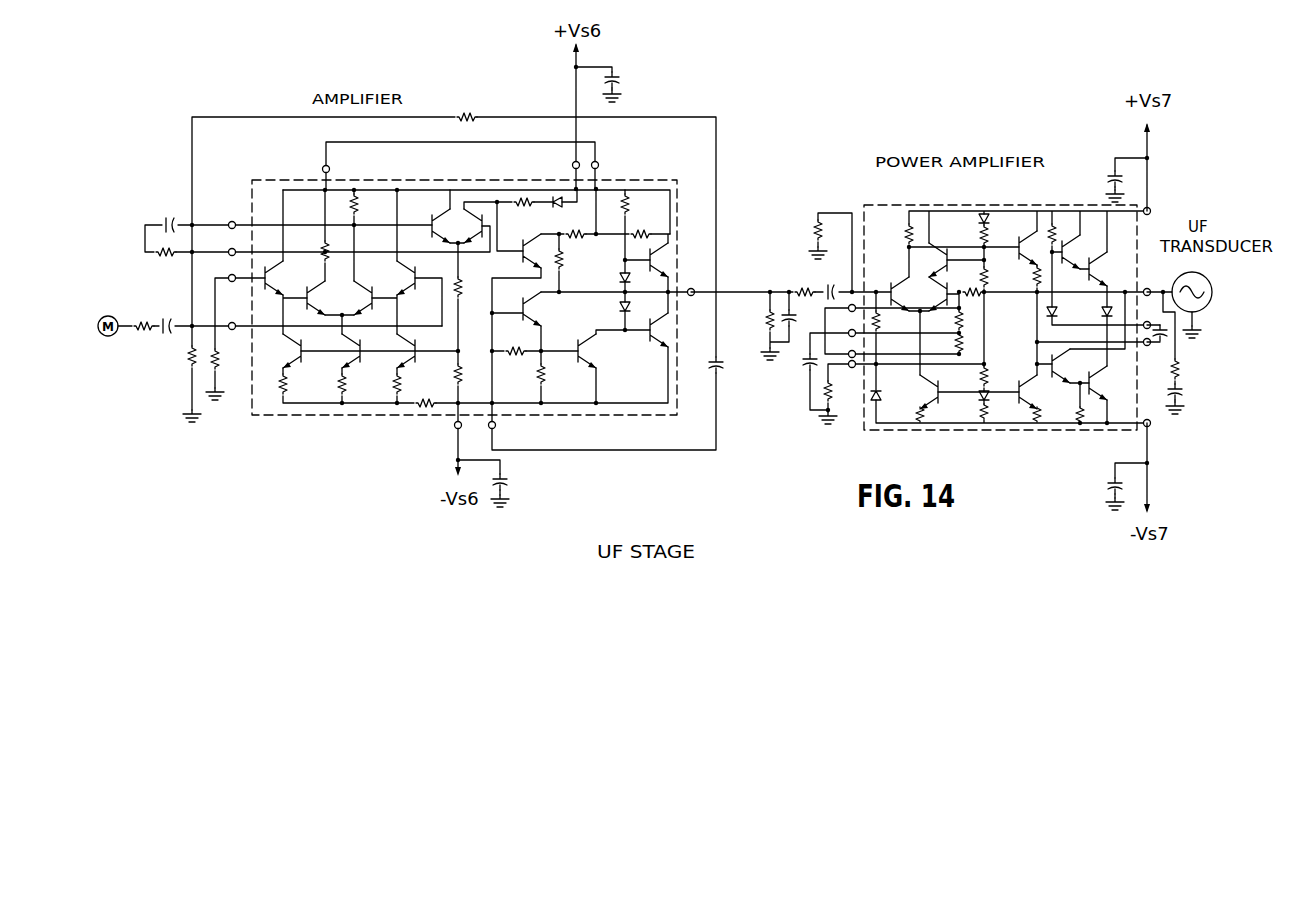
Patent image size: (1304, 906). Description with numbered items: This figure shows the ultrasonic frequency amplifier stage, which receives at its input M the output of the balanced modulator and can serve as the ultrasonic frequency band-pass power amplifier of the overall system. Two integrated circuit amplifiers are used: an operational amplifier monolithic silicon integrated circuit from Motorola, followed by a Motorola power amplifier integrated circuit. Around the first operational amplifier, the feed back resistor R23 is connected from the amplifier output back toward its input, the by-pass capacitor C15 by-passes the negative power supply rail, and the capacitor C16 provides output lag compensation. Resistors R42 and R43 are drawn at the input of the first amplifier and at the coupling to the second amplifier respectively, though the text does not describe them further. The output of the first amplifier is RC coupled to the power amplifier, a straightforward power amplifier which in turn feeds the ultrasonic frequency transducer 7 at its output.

The ultrasonic frequency transducer 7 is at (1212, 292).
The feed back resistor R23 is at (468, 110).
The resistor R42 is at (185, 364).
The resistor R43 is at (814, 240).
The by-pass capacitor C15 is at (505, 478).
The output lag compensation capacitor C16 is at (722, 370).